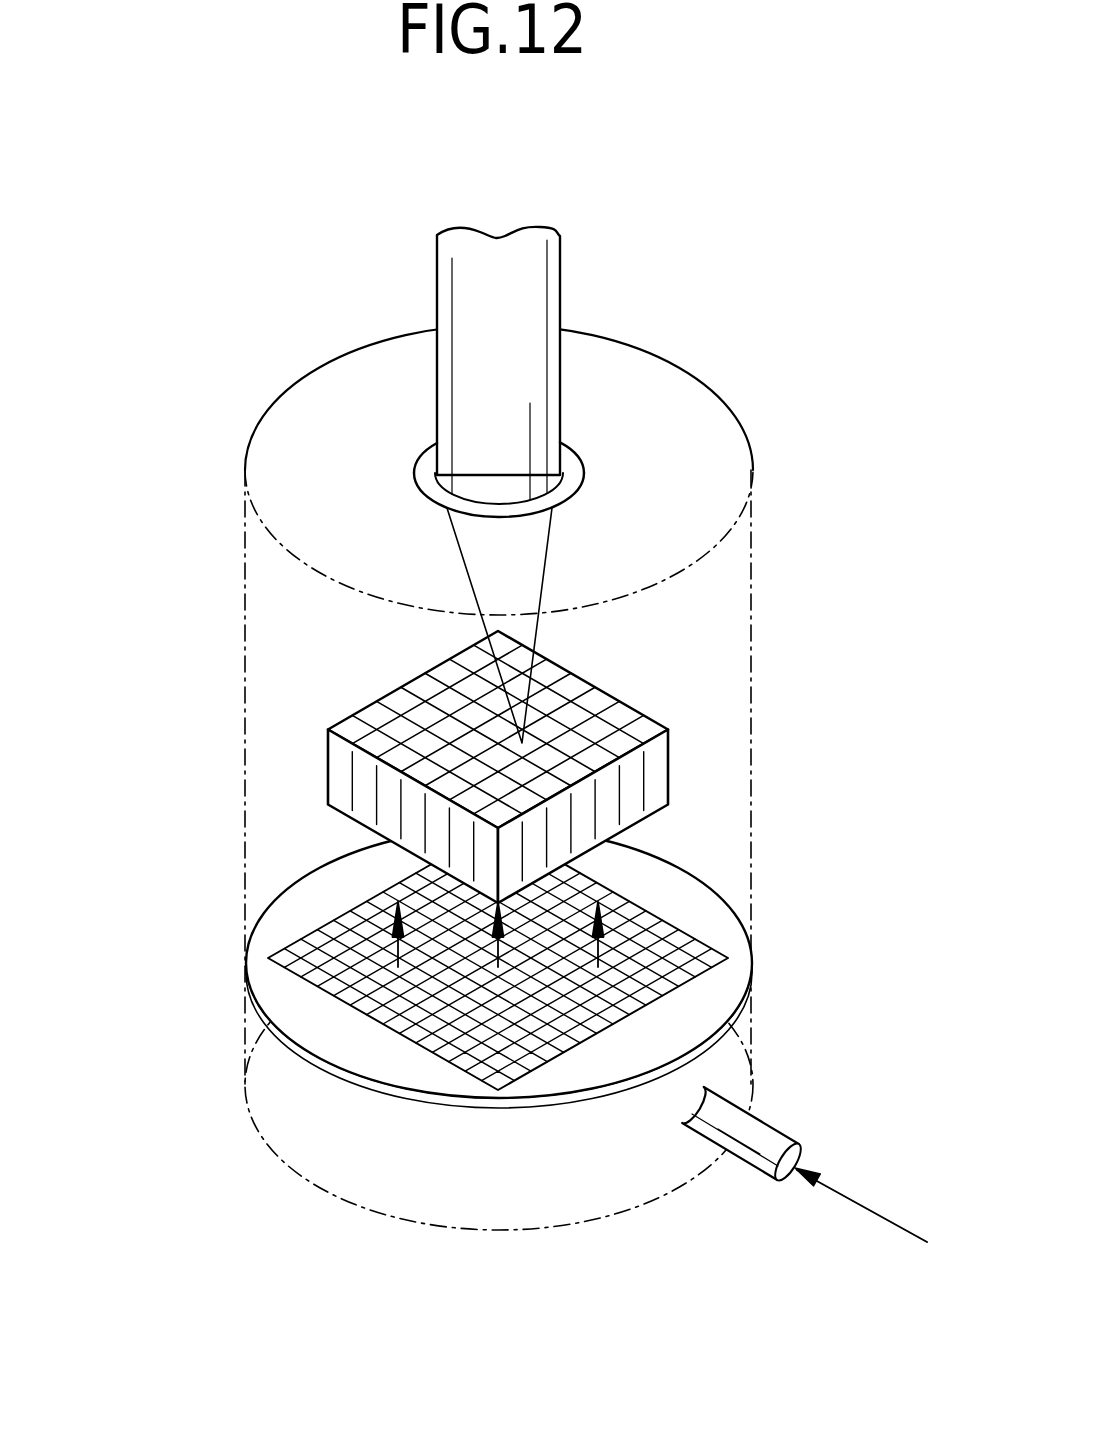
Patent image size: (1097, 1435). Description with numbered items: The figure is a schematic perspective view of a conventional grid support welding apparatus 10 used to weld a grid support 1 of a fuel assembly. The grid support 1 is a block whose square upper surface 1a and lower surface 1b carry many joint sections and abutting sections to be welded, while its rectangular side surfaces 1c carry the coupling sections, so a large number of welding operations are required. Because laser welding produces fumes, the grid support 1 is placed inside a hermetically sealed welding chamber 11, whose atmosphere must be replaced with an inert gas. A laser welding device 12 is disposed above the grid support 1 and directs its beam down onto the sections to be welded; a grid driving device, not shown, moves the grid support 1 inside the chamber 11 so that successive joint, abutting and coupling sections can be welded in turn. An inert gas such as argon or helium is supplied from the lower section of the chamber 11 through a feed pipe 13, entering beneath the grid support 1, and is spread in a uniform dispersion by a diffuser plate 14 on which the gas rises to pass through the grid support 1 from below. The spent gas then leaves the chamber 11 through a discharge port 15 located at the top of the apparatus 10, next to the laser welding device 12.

The grid support 1 is at (481, 728).
The upper surface 1a is at (372, 707).
The lower surface 1b is at (338, 812).
The side surfaces 1c is at (670, 753).
The grid support welding apparatus 10 is at (213, 480).
The welding chamber 11 is at (243, 777).
The laser welding device 12 is at (437, 293).
The feed pipe 13 is at (772, 1125).
The diffuser plate 14 is at (677, 947).
The discharge port 15 is at (562, 433).